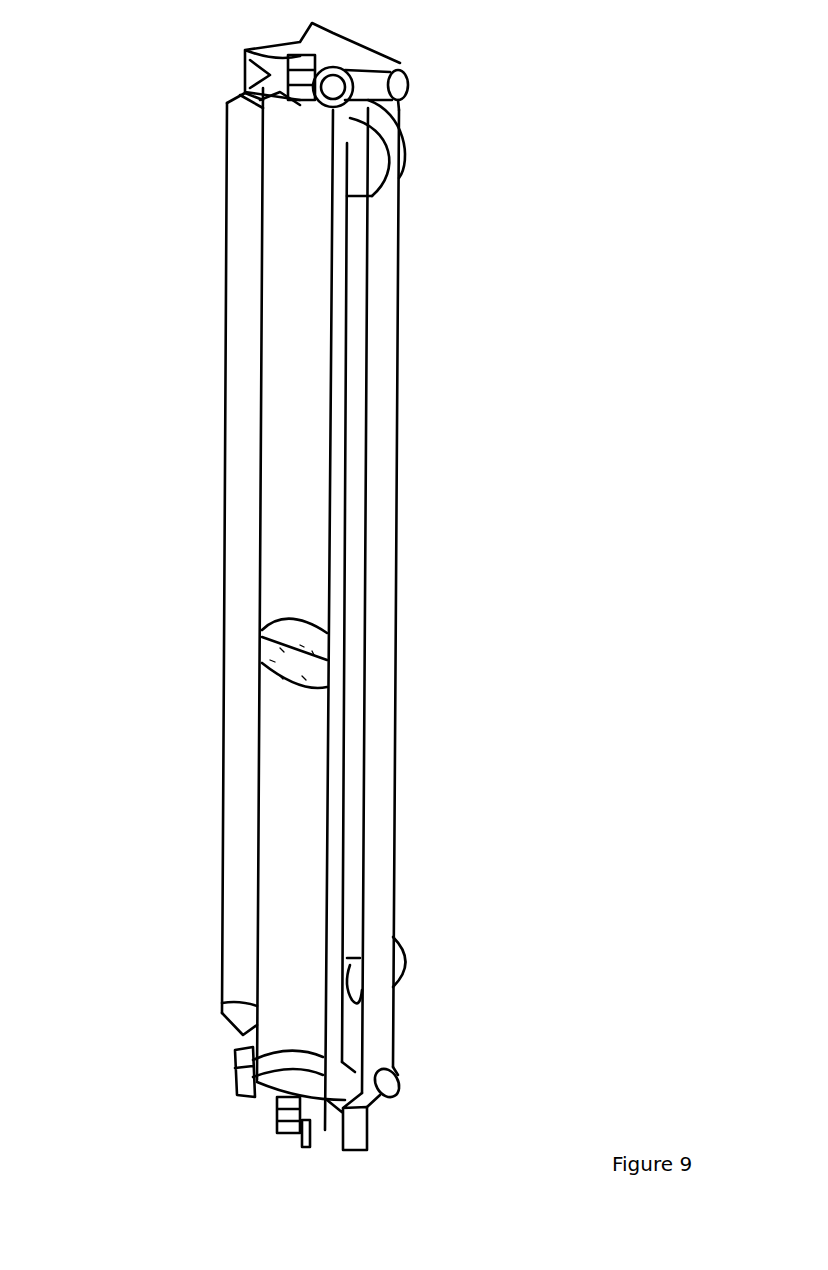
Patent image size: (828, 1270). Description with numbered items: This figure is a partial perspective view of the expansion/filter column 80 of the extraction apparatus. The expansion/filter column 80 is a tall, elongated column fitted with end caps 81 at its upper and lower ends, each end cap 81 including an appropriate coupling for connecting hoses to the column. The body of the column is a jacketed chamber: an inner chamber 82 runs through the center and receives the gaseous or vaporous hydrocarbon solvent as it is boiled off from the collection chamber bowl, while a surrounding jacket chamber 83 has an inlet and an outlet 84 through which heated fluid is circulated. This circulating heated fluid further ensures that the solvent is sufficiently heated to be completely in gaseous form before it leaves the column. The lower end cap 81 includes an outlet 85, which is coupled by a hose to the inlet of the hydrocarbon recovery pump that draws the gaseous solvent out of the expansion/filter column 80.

The expansion/filter column 80 is at (136, 473).
The end cap 81 is at (331, 92).
The inner chamber 82 is at (267, 468).
The jacket chamber 83 is at (240, 368).
The outlet 84 is at (402, 962).
The outlet 85 is at (298, 1146).